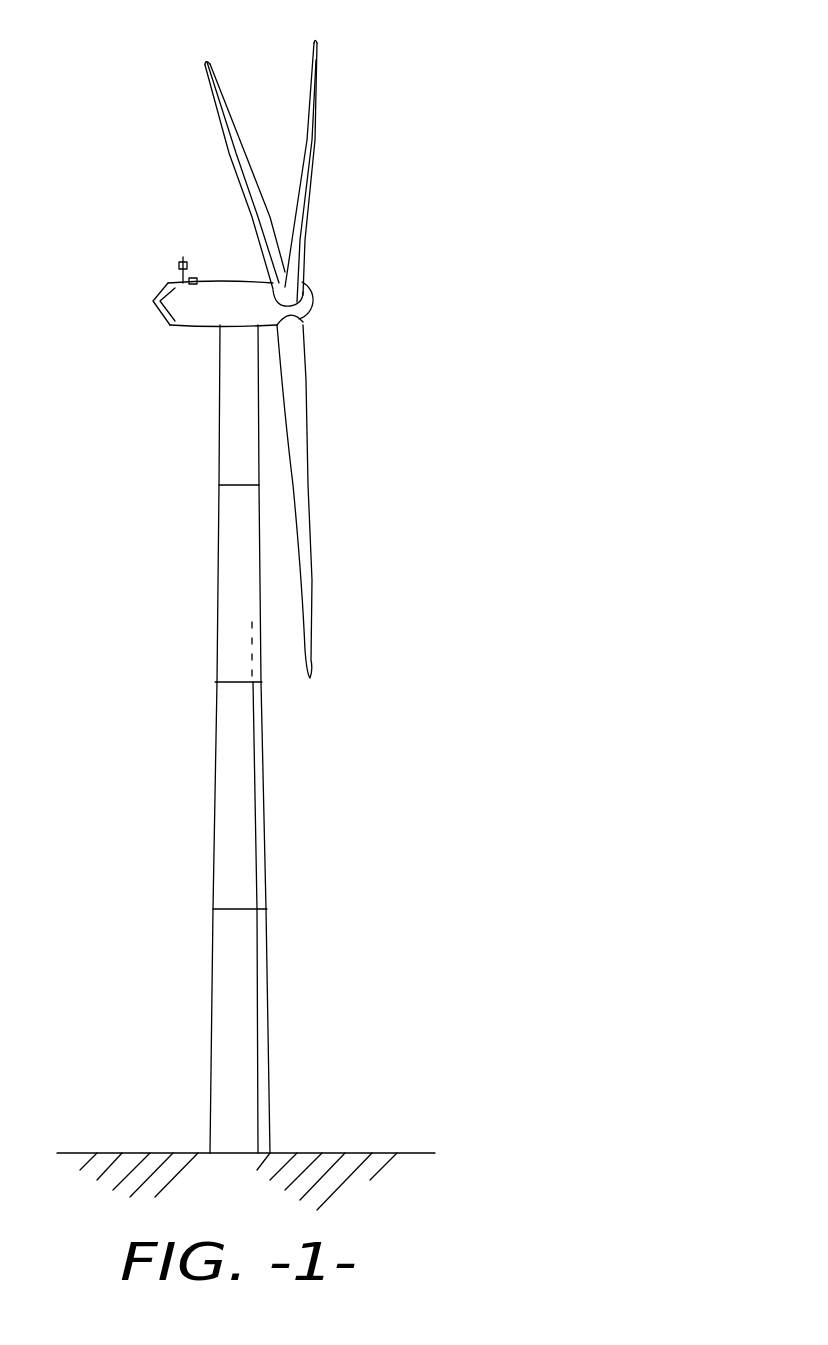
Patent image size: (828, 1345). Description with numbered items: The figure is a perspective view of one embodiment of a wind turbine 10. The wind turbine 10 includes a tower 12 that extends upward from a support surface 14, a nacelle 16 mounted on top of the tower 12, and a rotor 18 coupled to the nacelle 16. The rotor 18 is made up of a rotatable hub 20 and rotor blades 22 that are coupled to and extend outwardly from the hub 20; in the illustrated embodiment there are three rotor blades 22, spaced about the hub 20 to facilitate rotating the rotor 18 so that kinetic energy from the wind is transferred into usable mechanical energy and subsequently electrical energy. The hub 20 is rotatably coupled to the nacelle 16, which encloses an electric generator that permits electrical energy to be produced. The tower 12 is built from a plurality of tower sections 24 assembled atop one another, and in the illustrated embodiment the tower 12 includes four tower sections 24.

The wind turbine 10 is at (416, 116).
The tower 12 is at (216, 648).
The support surface 14 is at (140, 1153).
The nacelle 16 is at (197, 327).
The rotor 18 is at (318, 279).
The rotatable hub 20 is at (312, 305).
The rotor blade 22 is at (307, 83).
The tower section 24 is at (240, 830).